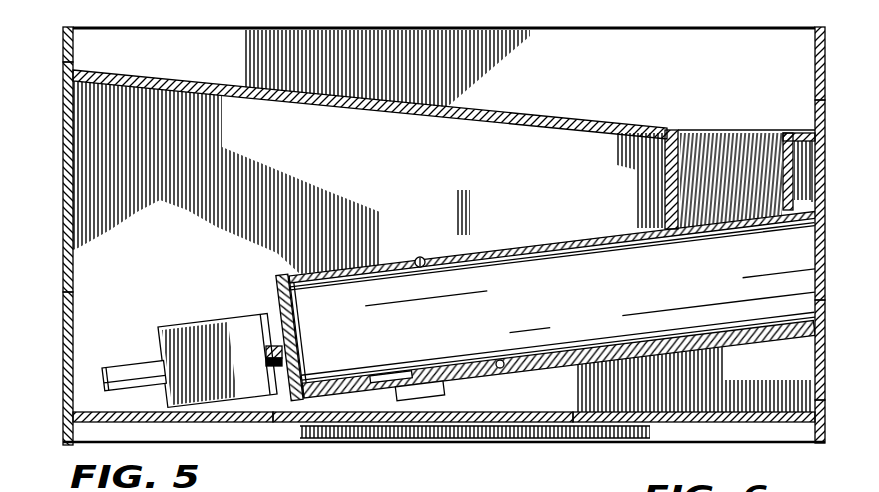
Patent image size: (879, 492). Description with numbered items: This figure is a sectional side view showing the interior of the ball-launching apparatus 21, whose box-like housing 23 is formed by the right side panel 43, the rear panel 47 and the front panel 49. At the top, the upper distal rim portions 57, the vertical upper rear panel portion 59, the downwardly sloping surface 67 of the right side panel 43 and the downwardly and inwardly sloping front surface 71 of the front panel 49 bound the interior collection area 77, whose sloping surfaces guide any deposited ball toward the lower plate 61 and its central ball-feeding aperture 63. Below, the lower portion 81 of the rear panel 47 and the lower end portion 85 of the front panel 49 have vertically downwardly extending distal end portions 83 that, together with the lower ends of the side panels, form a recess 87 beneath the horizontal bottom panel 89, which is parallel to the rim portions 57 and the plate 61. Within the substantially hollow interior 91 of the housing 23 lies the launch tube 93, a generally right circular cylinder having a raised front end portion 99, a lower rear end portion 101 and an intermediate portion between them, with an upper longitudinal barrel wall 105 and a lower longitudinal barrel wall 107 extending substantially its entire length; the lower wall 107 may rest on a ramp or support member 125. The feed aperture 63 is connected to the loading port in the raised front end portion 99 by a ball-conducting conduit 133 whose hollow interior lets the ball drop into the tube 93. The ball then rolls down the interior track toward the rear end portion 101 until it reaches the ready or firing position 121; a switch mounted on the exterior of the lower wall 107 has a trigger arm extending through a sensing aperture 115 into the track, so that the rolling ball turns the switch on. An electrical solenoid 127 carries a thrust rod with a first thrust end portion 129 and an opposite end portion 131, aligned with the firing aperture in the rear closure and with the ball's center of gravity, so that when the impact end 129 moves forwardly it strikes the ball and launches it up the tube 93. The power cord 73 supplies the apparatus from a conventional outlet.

The ball-launching apparatus 21 is at (673, 15).
The housing 23 is at (54, 134).
The right side panel 43 is at (163, 157).
The rear panel 47 is at (63, 176).
The front panel 49 is at (827, 160).
The top rim portion 57 is at (325, 10).
The vertical upper rear panel portion 59 is at (63, 38).
The lower plate 61 is at (797, 104).
The ball-feeding aperture 63 is at (750, 128).
The downwardly sloping surface of right side panel 67 is at (587, 76).
The downwardly and inwardly sloping front surface 71 is at (827, 72).
The electrical power cord 73 is at (827, 425).
The interior collection area 77 is at (495, 26).
The lower portion of rear panel 81 is at (63, 298).
The distal end portions 83 is at (66, 430).
The lower end portion of front panel 85 is at (827, 356).
The recess 87 is at (537, 430).
The bottom panel 89 is at (395, 428).
The hollow interior 91 is at (428, 179).
The launch tube 93 is at (476, 236).
The raised front end portion 99 is at (695, 348).
The rear end portion 101 is at (345, 241).
The upper longitudinal barrel wall 105 is at (420, 257).
The lower longitudinal barrel wall 107 is at (500, 368).
The sensing aperture 115 is at (370, 395).
The firing position 121 is at (335, 378).
The support member 125 is at (278, 424).
The electrical solenoid 127 is at (190, 333).
The first thrust end portion 129 is at (267, 354).
The second opposite end portion 131 is at (128, 372).
The ball-conducting conduit 133 is at (664, 178).